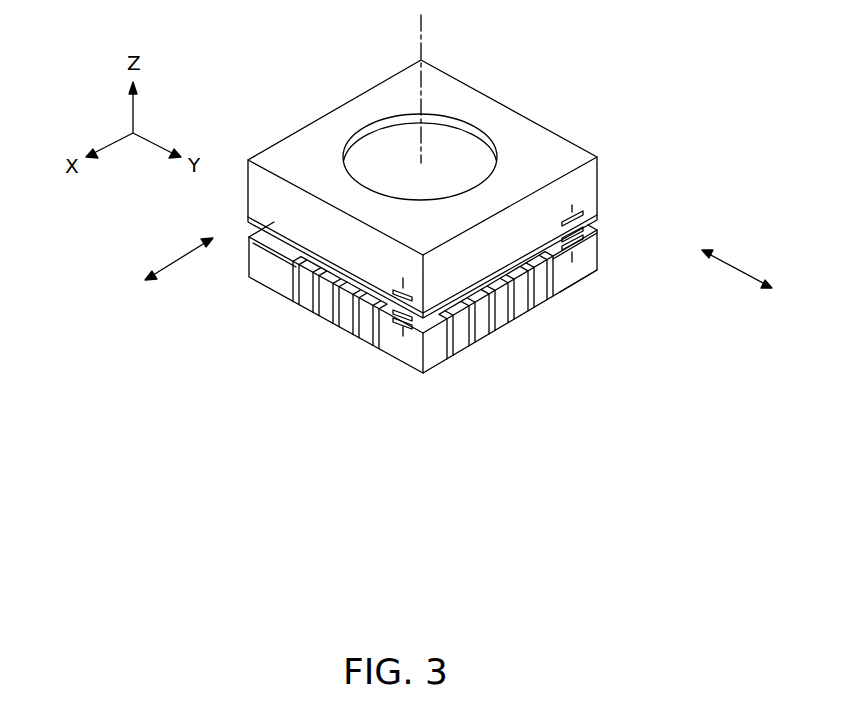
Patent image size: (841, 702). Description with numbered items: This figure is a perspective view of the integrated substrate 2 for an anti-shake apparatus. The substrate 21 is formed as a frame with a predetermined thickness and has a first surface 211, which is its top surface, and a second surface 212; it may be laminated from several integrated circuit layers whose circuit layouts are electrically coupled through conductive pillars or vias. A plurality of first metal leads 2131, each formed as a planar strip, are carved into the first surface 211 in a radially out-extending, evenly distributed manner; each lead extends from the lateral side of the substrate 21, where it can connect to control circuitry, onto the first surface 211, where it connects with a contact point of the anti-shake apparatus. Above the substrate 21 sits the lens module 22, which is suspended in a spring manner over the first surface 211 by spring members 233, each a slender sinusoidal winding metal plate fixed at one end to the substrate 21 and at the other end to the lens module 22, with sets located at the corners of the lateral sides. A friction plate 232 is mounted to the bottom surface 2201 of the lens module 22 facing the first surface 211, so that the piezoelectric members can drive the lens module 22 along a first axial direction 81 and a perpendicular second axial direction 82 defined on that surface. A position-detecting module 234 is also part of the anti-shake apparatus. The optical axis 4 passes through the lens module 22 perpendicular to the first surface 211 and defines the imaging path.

The integrated substrate 2 is at (266, 78).
The optical axis 4 is at (422, 42).
The substrate 21 is at (478, 306).
The lens module 22 is at (596, 183).
The first axial direction 81 is at (178, 259).
The second axial direction 82 is at (742, 268).
The first surface 211 is at (598, 229).
The second surface 212 is at (580, 283).
The friction plate 232 is at (584, 224).
The spring member 233 is at (578, 255).
The position-detecting module 234 is at (457, 312).
The first metal lead 2131 is at (327, 320).
The bottom surface of the lens module 2201 is at (588, 217).